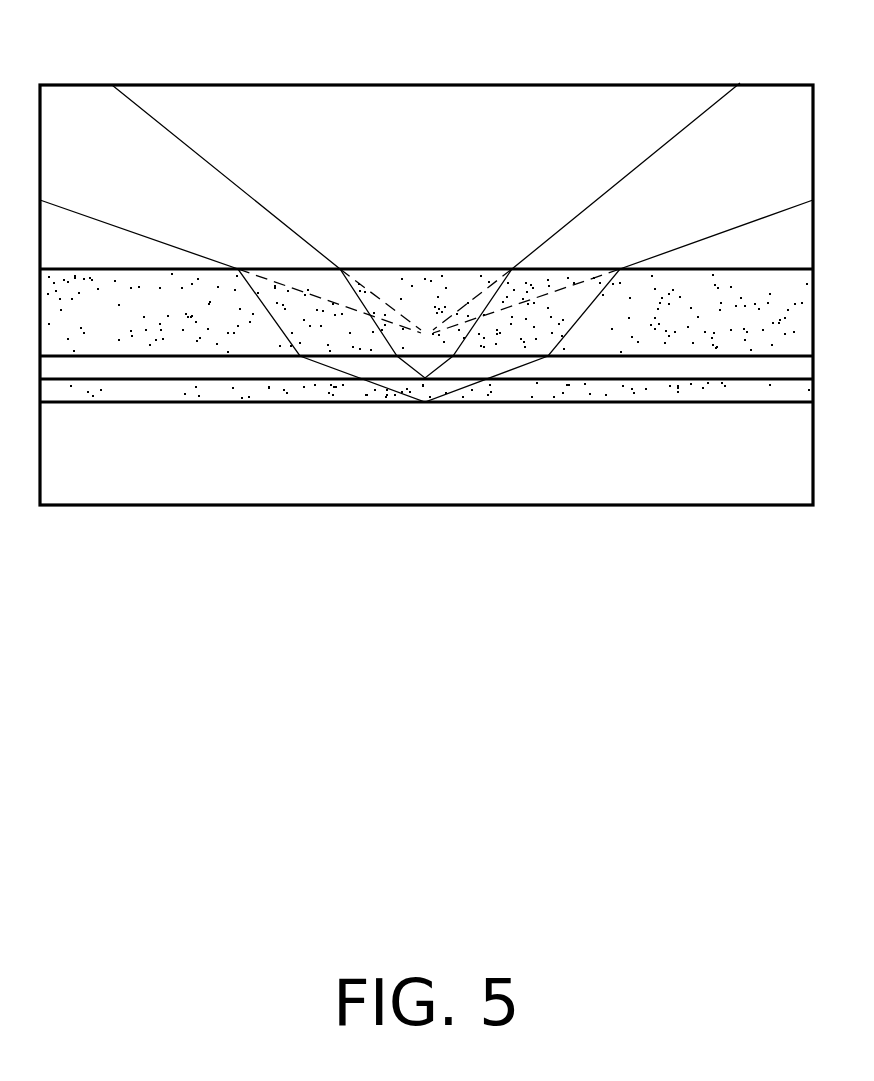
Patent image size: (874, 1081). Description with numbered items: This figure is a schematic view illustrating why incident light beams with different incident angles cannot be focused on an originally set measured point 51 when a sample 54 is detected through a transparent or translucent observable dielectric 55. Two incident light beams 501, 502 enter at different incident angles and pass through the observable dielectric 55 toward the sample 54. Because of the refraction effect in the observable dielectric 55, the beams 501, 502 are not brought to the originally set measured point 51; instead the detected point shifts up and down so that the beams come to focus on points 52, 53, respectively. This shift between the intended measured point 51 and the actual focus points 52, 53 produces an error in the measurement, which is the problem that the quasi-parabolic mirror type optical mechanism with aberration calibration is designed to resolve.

The originally set measured point 51 is at (426, 412).
The shifted focus point 52 is at (426, 259).
The shifted focus point 53 is at (429, 228).
The sample 54 is at (721, 195).
The observable dielectric 55 is at (143, 343).
The incident light beam 501 is at (426, 284).
The incident light beam 502 is at (426, 230).